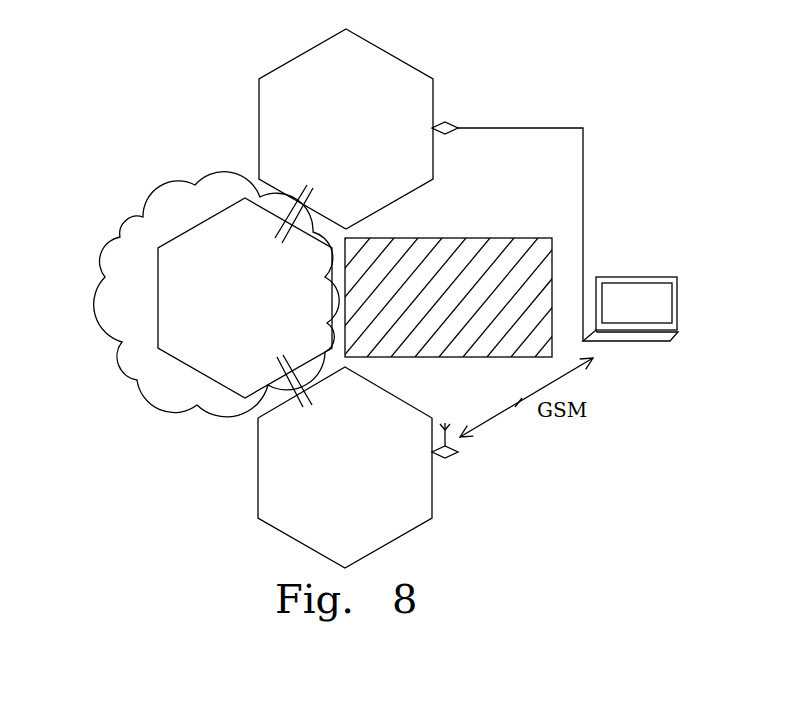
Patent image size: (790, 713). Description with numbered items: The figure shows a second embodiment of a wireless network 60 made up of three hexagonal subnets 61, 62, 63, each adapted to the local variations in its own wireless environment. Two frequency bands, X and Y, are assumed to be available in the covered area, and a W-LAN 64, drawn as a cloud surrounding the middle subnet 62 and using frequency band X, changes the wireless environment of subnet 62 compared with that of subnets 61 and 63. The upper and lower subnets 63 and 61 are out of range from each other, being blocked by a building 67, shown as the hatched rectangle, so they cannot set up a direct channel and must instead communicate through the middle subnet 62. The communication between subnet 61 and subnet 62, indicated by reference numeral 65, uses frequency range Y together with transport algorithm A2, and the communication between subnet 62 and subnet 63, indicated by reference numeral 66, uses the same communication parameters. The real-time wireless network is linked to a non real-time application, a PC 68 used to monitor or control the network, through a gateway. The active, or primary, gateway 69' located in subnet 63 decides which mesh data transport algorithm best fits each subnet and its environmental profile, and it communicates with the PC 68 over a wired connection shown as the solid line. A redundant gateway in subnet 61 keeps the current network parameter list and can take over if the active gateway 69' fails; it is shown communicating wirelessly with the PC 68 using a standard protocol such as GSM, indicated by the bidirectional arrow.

The wireless network 60 is at (98, 100).
The subnet 61 is at (403, 497).
The subnet 62 is at (137, 377).
The subnet 63 is at (420, 98).
The W-LAN 64 is at (133, 243).
The communication between subnet 61 and 62 65 is at (283, 389).
The communication between subnet 62 and 63 66 is at (285, 202).
The building 67 is at (433, 239).
The PC 68 is at (618, 277).
The gateway 69' is at (471, 144).